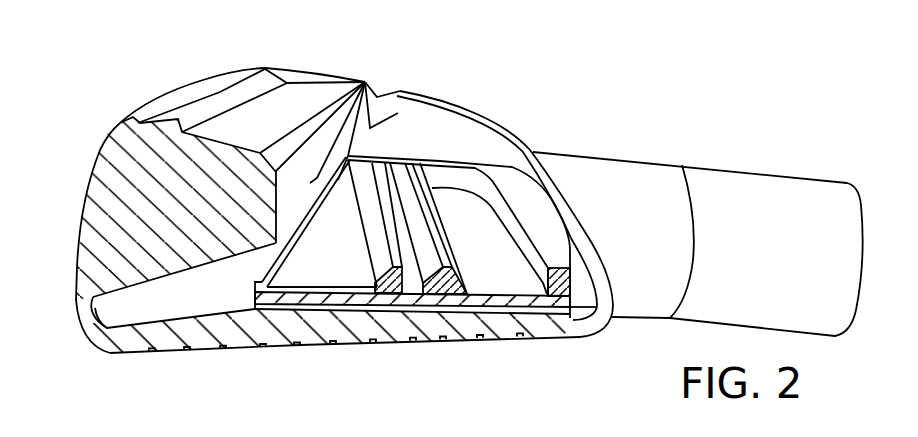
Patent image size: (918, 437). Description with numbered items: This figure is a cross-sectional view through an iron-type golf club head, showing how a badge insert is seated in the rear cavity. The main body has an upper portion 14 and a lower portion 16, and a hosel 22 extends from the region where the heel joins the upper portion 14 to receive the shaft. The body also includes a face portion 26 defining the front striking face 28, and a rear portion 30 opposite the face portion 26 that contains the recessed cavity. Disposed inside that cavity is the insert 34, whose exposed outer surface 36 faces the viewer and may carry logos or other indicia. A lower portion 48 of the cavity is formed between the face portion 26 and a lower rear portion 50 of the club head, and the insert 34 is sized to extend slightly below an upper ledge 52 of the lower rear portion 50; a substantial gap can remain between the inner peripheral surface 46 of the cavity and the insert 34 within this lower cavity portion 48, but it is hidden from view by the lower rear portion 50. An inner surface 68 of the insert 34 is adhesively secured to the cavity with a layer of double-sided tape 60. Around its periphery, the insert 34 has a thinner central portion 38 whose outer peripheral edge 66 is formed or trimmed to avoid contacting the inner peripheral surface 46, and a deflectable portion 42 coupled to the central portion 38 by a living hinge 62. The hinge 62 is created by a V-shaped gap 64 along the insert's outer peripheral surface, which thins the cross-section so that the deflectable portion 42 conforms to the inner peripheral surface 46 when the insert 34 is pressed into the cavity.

The upper portion 14 is at (598, 290).
The lower portion 16 is at (78, 263).
The hosel 22 is at (648, 163).
The face portion 26 is at (533, 338).
The front striking face 28 is at (350, 348).
The rear portion 30 is at (305, 97).
The insert 34 is at (472, 205).
The exposed outer surface 36 is at (452, 217).
The central portion 38 is at (337, 270).
The deflectable portion 42 is at (560, 262).
The inner peripheral surface 46 is at (537, 190).
The lower portion of the cavity 48 is at (187, 300).
The lower rear portion 50 is at (198, 80).
The upper ledge 52 is at (365, 82).
The layer of double-sided tape 60 is at (415, 313).
The living hinge 62 is at (557, 298).
The V-shaped gap 64 is at (599, 287).
The outer peripheral edge 66 is at (587, 318).
The inner surface 68 is at (262, 345).